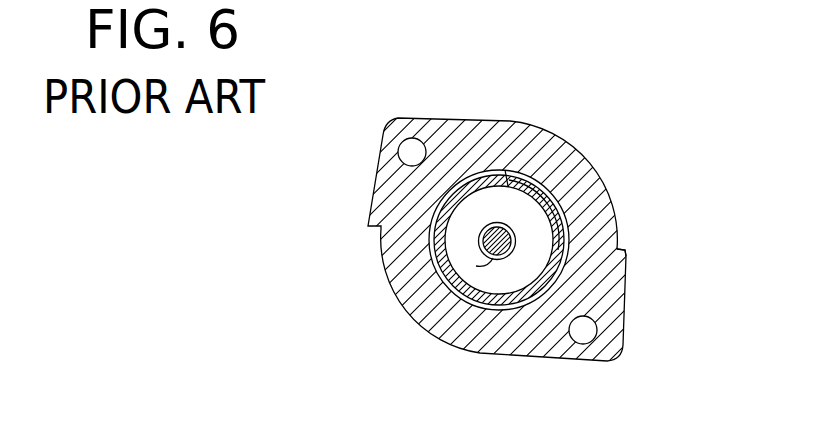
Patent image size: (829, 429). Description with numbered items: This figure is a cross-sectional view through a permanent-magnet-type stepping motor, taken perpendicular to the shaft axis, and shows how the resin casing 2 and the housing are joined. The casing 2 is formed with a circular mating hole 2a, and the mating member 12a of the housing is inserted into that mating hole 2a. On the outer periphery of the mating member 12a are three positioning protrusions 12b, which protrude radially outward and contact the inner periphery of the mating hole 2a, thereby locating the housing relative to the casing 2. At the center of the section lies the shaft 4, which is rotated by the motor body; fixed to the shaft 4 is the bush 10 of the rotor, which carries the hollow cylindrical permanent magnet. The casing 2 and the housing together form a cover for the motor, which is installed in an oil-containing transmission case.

The casing 2 is at (598, 208).
The mating hole 2a is at (560, 262).
The shaft 4 is at (495, 262).
The bush 10 is at (491, 256).
The mating member 12a is at (560, 186).
The positioning protrusions 12b is at (513, 156).